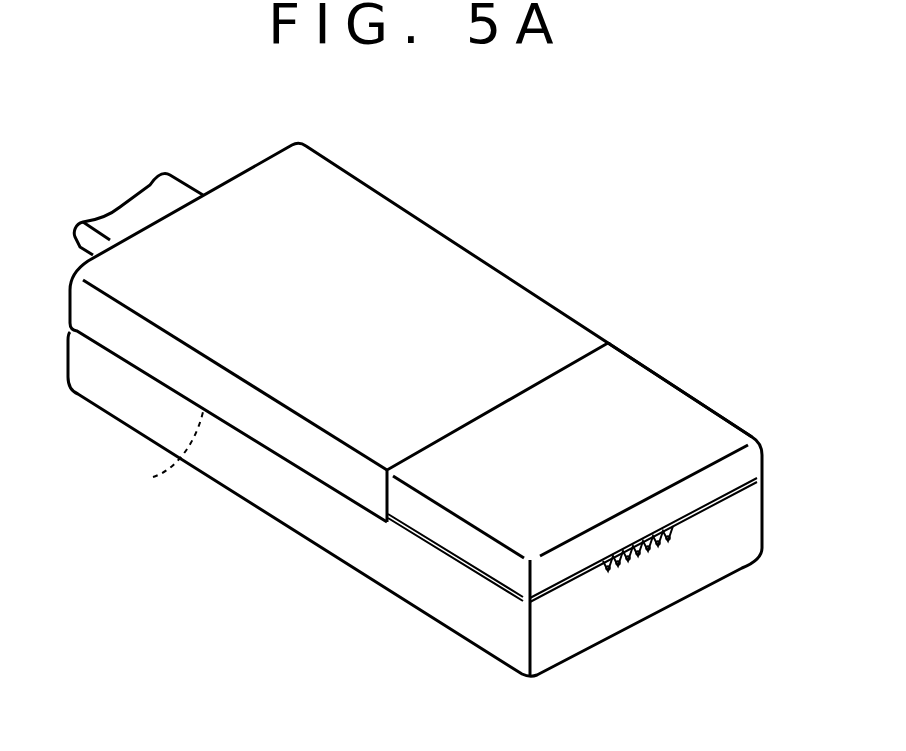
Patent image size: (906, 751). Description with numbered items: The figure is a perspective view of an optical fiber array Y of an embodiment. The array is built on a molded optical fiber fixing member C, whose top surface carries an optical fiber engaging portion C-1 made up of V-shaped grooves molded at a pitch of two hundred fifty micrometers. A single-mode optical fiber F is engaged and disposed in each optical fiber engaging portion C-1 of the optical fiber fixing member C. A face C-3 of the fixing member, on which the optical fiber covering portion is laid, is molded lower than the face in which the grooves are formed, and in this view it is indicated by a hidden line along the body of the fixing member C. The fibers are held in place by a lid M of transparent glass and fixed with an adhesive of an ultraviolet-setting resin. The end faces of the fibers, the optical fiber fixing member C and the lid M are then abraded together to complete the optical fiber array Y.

The optical fiber array Y is at (563, 283).
The lid M is at (712, 430).
The optical fiber fixing member C is at (307, 517).
The optical fiber engaging portion C-1 is at (652, 545).
The face on which an optical fiber covering portion is laid C-3 is at (153, 477).
The single-mode optical fiber F is at (681, 522).